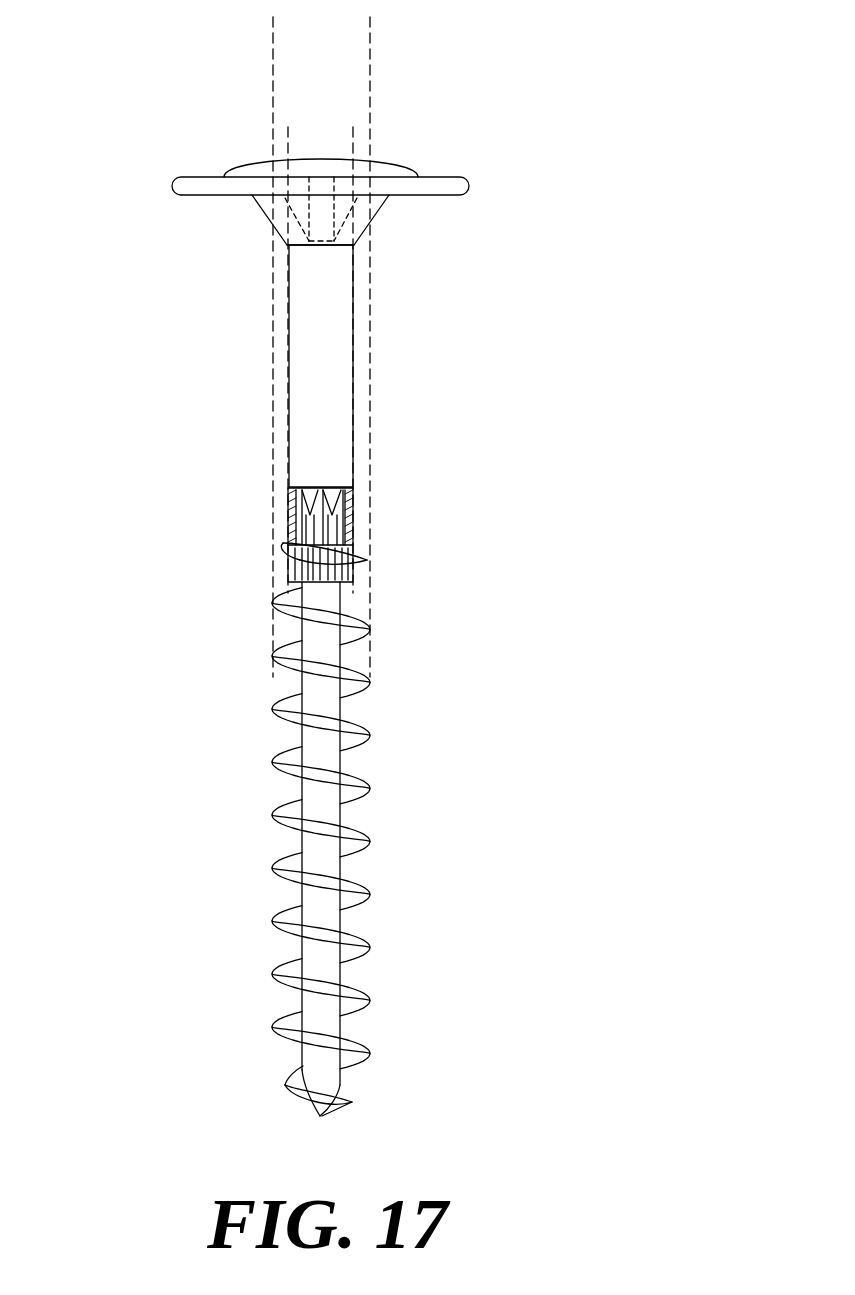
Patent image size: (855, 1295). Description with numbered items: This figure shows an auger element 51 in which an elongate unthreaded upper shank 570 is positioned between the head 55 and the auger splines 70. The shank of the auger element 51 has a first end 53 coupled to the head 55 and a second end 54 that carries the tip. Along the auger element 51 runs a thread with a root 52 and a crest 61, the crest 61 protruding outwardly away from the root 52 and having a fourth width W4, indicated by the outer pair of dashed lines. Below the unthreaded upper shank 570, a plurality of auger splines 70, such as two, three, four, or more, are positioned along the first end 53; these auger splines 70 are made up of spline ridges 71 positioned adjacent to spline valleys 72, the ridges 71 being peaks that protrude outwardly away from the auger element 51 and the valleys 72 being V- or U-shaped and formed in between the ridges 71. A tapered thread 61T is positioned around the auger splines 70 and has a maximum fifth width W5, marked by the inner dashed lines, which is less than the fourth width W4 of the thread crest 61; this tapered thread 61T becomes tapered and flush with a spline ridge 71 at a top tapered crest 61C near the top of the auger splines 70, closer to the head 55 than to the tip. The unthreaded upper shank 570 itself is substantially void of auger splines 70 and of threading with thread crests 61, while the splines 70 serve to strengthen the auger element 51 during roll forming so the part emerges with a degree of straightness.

The auger element 51 is at (134, 149).
The thread root 52 is at (283, 752).
The first end 53 is at (255, 366).
The second end 54 is at (240, 1025).
The head 55 is at (469, 183).
The unthreaded upper shank 570 is at (343, 337).
The thread crest 61 is at (368, 730).
The top tapered crest 61C is at (286, 542).
The tapered thread 61T is at (308, 563).
The auger splines 70 is at (337, 535).
The spline ridge 71 is at (347, 525).
The spline valley 72 is at (355, 580).
The fourth width W4 is at (321, 343).
The fifth width W5 is at (320, 335).